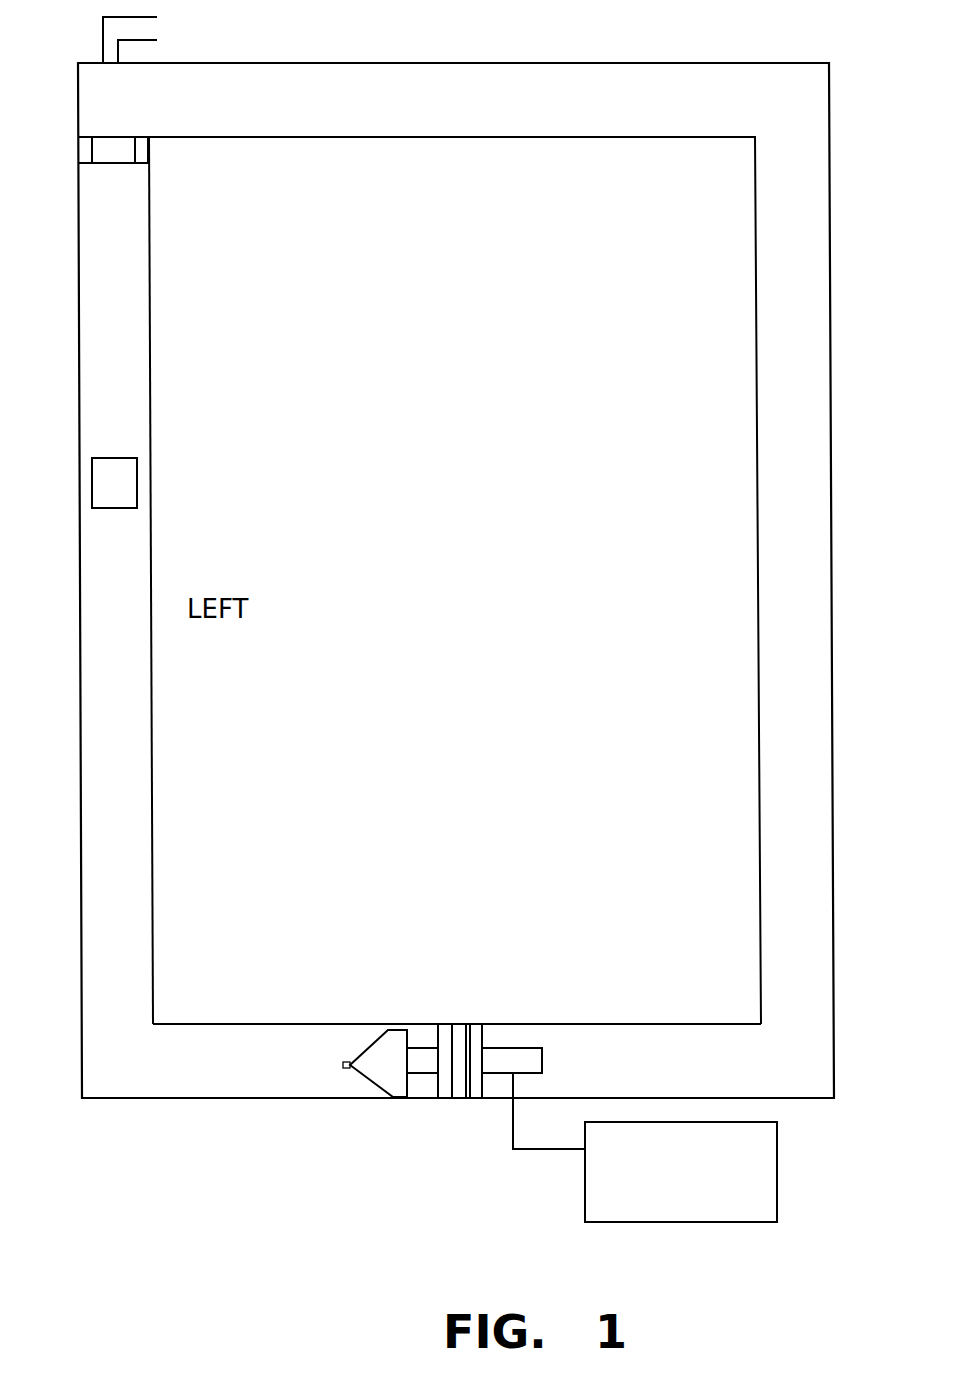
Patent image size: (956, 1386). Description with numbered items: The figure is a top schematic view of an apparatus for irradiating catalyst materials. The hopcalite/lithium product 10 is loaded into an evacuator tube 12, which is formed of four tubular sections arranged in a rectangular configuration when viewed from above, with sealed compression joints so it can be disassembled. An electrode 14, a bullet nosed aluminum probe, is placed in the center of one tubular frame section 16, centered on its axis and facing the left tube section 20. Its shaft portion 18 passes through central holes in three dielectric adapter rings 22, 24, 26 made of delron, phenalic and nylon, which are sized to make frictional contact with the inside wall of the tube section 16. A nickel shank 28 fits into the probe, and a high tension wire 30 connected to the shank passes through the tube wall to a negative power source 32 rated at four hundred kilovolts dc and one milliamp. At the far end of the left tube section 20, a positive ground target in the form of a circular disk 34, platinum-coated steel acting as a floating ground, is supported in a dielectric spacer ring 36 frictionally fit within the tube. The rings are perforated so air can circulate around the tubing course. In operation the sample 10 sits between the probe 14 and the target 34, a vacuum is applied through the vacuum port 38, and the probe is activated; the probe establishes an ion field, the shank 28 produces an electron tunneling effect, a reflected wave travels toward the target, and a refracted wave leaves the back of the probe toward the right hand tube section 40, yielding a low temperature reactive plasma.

The hopcalite/lithium product 10 is at (127, 483).
The evacuator tube 12 is at (243, 1108).
The electrode 14 is at (423, 1053).
The tubular frame section 16 is at (632, 1037).
The shaft portion 18 is at (523, 1048).
The left tube section 20 is at (140, 788).
The dielectric adapter ring 22 is at (448, 1028).
The dielectric adapter ring 24 is at (460, 1093).
The dielectric adapter ring 26 is at (475, 1030).
The nickel shank 28 is at (343, 1065).
The high tension wire 30 is at (512, 1140).
The negative power source 32 is at (585, 1193).
The circular disk 34 is at (118, 163).
The dielectric spacer ring 36 is at (143, 150).
The vacuum port 38 is at (199, 31).
The right hand tube section 40 is at (763, 645).